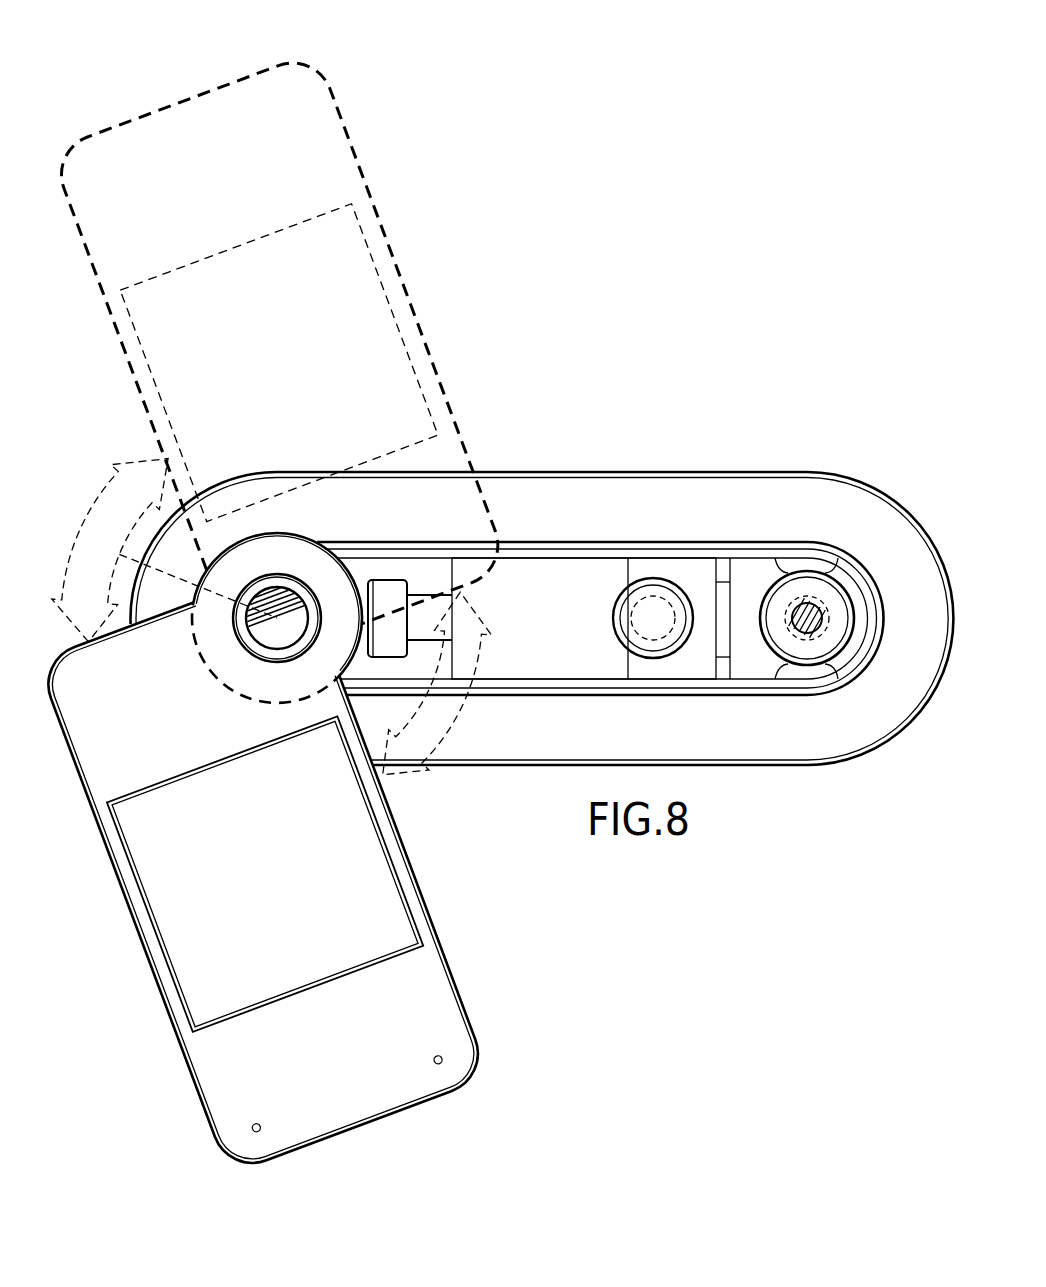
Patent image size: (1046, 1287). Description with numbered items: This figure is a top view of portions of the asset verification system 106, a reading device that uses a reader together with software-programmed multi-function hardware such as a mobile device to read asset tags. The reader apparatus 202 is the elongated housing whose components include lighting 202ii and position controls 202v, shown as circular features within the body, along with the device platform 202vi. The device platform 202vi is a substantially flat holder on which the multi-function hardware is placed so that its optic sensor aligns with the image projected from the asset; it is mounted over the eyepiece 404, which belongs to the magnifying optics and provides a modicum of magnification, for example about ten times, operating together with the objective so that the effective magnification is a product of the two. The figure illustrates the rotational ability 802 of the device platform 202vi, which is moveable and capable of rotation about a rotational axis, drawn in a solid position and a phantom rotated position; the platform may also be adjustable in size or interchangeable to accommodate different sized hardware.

The asset verification system 106 is at (730, 244).
The reader apparatus 202 is at (845, 683).
The position controls 202v is at (672, 582).
The lighting 202ii is at (808, 596).
The device platform 202vi is at (459, 431).
The eyepiece 404 is at (302, 611).
The rotational ability 802 is at (97, 488).